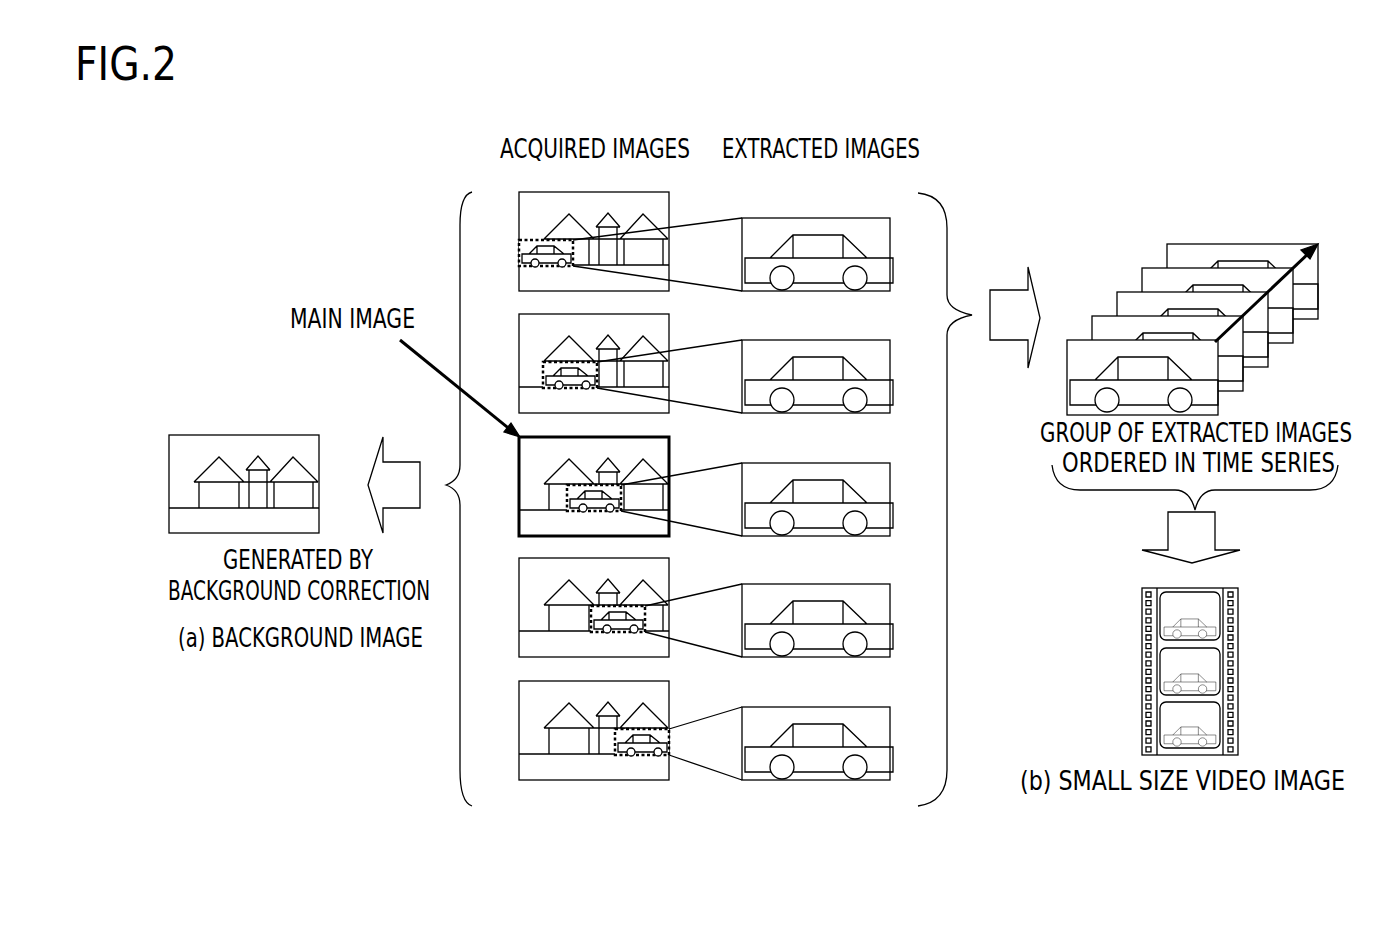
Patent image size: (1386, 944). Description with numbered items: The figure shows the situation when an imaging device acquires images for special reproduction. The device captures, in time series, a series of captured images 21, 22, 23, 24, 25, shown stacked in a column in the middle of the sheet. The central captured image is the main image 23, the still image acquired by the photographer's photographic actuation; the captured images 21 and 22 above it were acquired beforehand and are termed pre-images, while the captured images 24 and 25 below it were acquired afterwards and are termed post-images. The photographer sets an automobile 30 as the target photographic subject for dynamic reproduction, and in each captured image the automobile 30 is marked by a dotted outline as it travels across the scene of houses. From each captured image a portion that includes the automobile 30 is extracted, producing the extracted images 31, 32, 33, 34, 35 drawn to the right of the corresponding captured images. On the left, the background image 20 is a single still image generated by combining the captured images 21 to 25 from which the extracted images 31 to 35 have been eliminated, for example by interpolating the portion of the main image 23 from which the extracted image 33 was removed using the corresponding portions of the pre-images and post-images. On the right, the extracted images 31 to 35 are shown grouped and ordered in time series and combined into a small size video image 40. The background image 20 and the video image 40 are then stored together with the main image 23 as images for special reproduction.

The background image 20 is at (170, 435).
The captured image (pre-image) 21 is at (519, 203).
The captured image (pre-image) 22 is at (519, 322).
The main image 23 is at (517, 453).
The captured image (post-image) 24 is at (518, 575).
The captured image (post-image) 25 is at (518, 703).
The automobile 30 is at (520, 266).
The extracted image 31 is at (828, 218).
The extracted image 32 is at (830, 340).
The extracted image 33 is at (838, 463).
The extracted image 34 is at (850, 584).
The extracted image 35 is at (850, 707).
The video image 40 is at (1143, 595).